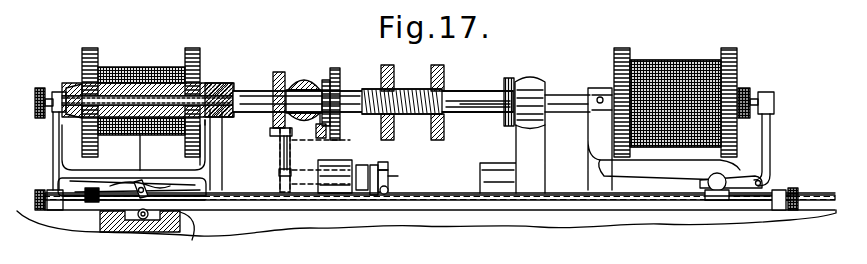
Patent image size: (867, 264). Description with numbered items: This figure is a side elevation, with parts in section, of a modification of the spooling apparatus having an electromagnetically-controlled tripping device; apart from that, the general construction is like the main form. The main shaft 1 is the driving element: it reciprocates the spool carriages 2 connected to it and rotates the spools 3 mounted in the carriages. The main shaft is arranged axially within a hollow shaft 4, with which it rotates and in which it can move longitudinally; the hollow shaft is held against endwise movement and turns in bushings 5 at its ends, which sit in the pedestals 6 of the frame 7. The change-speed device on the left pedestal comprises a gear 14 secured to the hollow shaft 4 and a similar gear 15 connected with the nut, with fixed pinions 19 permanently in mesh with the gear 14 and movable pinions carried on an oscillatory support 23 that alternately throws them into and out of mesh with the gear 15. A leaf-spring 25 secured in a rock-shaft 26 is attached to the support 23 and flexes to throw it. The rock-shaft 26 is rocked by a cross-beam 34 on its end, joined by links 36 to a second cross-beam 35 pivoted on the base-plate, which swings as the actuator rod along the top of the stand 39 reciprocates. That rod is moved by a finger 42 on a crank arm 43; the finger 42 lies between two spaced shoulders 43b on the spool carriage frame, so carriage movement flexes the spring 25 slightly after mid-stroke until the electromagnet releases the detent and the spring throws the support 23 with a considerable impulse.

The main shaft 1 is at (255, 90).
The spool carriage 2 is at (399, 142).
The spool 3 is at (136, 72).
The hollow shaft 4 is at (480, 108).
The bushing 5 is at (547, 90).
The pedestal 6 is at (512, 159).
The frame 7 is at (436, 214).
The gear 14 is at (338, 73).
The gear 15 is at (262, 80).
The fixed pinion 19 is at (332, 138).
The oscillatory carrier or support 23 is at (284, 150).
The leaf-spring 25 is at (276, 135).
The rock-shaft 26 is at (279, 172).
The cross-beam 34 is at (380, 165).
The cross-beam 35 is at (384, 194).
The link 36 is at (390, 179).
The stand 39 is at (283, 226).
The finger 42 is at (136, 196).
The crank arm 43 is at (188, 228).
The shoulder 43b is at (142, 188).